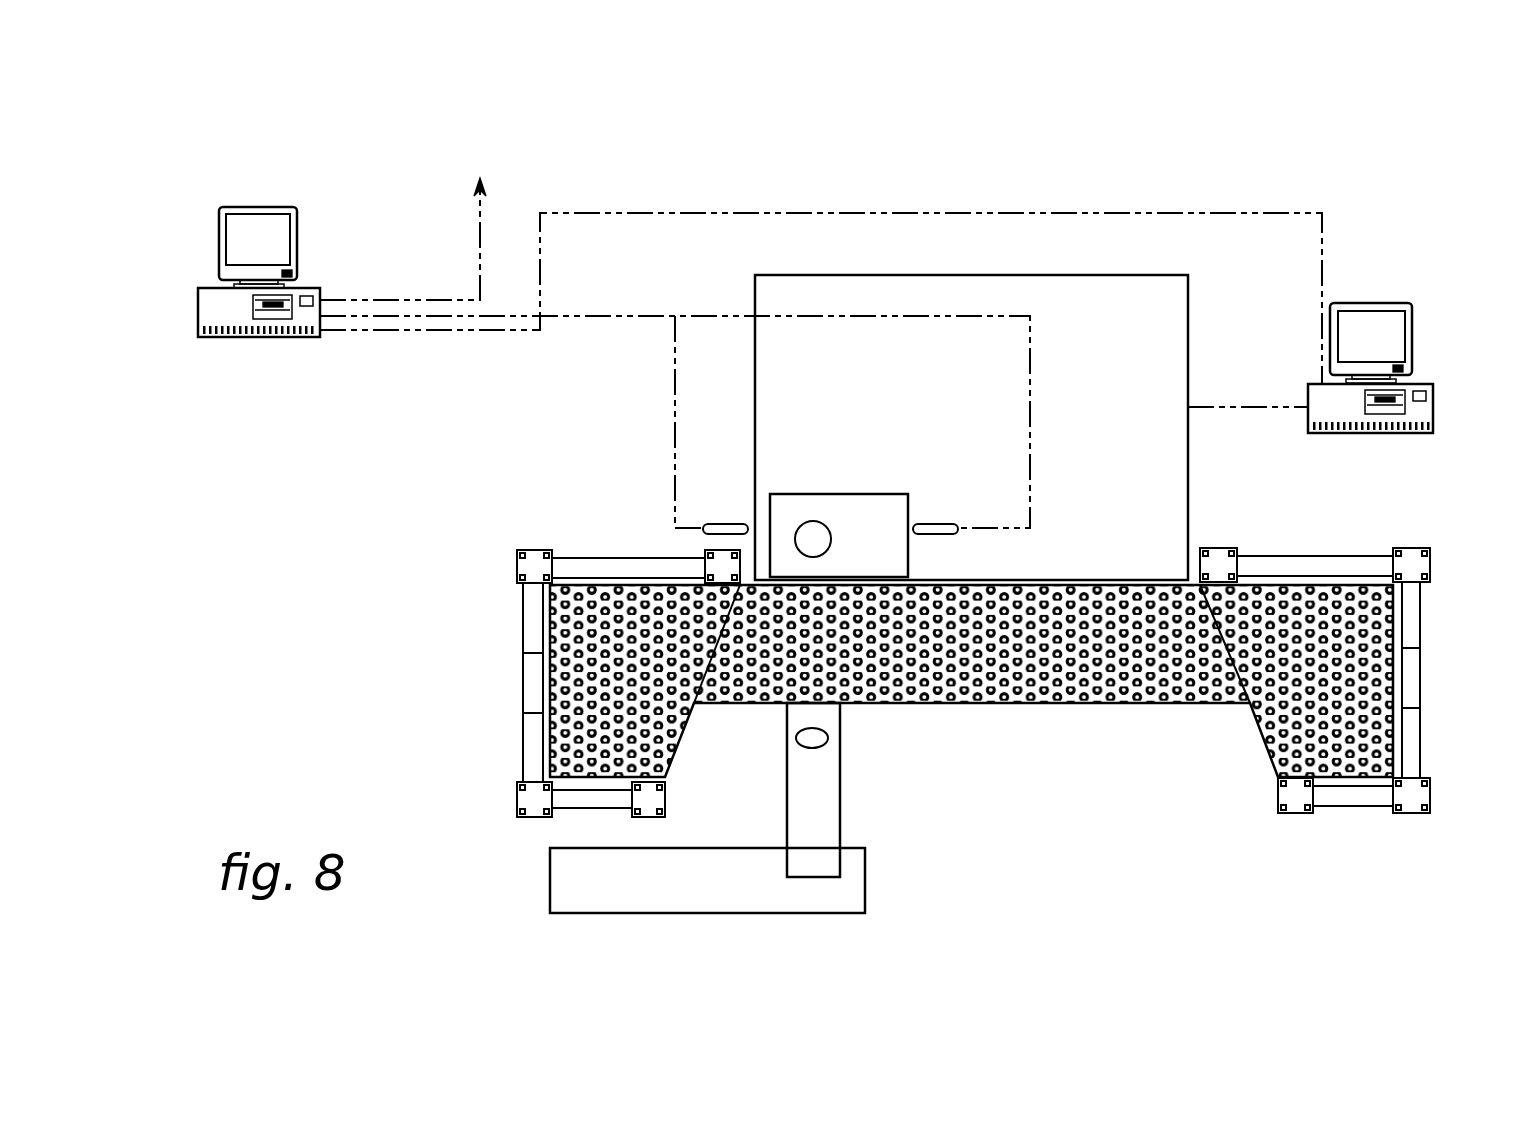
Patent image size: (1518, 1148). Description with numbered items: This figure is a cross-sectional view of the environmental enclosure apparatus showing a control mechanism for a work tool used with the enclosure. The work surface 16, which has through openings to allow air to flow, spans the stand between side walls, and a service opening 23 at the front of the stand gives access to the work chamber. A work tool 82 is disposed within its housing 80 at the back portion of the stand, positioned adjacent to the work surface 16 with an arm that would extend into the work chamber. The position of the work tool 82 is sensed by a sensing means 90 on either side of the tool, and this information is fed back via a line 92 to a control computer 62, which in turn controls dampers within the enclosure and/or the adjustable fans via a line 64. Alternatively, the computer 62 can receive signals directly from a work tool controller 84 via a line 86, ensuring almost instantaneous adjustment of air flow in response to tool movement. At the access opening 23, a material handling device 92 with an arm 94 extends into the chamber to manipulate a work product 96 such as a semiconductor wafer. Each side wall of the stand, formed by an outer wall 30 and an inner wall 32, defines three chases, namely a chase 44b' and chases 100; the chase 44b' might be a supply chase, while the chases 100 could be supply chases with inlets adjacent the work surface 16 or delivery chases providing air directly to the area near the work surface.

The work surface 16 is at (1017, 703).
The service opening 23 is at (1165, 778).
The outer wall 30 is at (523, 630).
The inner wall 32 is at (523, 598).
The chase 44b' is at (973, 681).
The control computer 62 is at (258, 350).
The line 64 is at (392, 300).
The housing 80 is at (1188, 473).
The work tool 82 is at (841, 494).
The work tool controller 84 is at (1428, 368).
The line 86 is at (735, 213).
The sensing means 90 is at (721, 524).
The material handling device 92 is at (587, 320).
The arm 94 is at (832, 820).
The work product 96 is at (798, 739).
The chase 100 is at (523, 608).